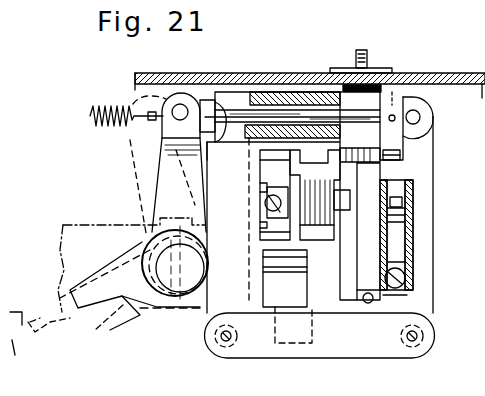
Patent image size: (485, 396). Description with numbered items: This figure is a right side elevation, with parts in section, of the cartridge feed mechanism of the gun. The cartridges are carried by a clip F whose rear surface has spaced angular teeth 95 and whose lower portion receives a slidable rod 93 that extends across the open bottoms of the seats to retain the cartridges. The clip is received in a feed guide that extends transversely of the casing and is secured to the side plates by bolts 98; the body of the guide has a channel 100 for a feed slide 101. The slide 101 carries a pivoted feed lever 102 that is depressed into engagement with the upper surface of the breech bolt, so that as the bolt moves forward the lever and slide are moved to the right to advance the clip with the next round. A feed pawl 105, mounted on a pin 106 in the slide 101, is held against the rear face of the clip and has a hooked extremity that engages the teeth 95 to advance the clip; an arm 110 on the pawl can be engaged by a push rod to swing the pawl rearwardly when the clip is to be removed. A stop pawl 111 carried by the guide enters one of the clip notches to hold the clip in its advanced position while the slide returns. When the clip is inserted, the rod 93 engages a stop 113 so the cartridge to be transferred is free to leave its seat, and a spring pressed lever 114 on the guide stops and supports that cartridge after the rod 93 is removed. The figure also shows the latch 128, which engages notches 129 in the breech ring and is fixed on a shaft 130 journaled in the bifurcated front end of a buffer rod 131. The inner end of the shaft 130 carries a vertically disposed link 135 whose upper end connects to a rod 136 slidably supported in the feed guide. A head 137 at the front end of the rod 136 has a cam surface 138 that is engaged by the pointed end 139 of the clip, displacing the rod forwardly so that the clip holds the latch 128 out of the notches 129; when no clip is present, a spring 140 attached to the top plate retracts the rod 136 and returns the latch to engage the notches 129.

The stop pawl 111 is at (368, 60).
The feed slide 101 is at (262, 156).
The rod 136 is at (299, 118).
The link 135 is at (191, 200).
The spring 140 is at (107, 104).
The shaft 130 is at (168, 278).
The latch 128 is at (113, 295).
The buffer rod 131 is at (75, 233).
The notches 129 is at (29, 333).
The arm 110 is at (268, 190).
The channel 100 is at (255, 247).
The pin 106 is at (312, 228).
The feed lever 102 is at (302, 297).
The clip F is at (367, 190).
The spring pressed lever 114 is at (398, 243).
The rod 93 is at (368, 292).
The stop 113 is at (365, 305).
The angular teeth 95 is at (350, 205).
The feed pawl 105 is at (322, 200).
The pointed end 139 is at (356, 146).
The head 137 is at (393, 101).
The cam surface 138 is at (415, 157).
The bolts 98 is at (421, 117).